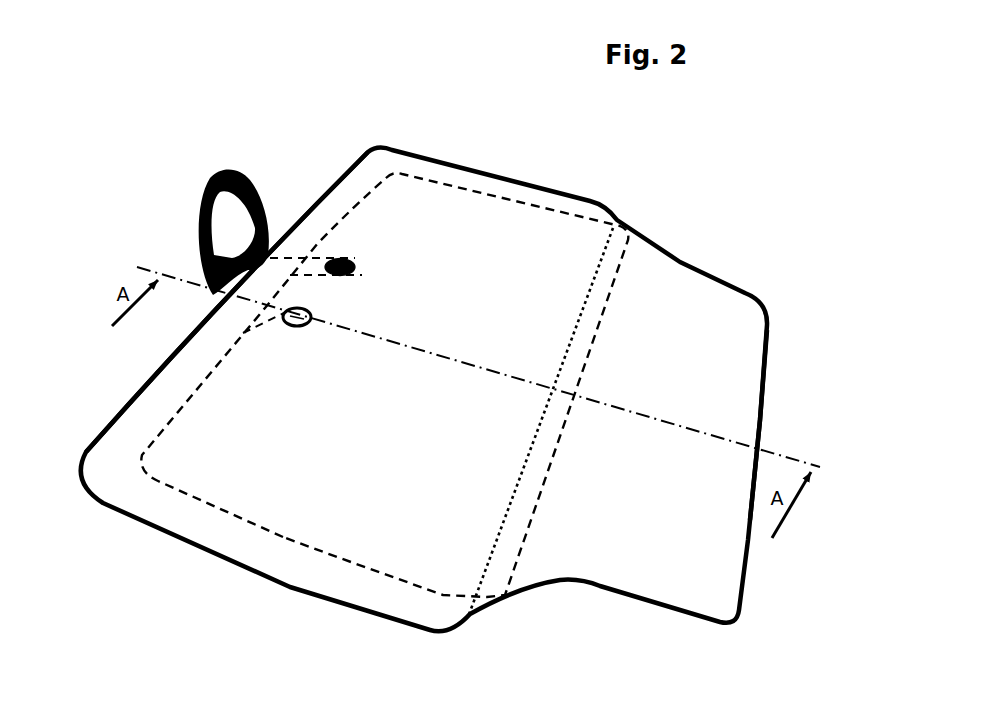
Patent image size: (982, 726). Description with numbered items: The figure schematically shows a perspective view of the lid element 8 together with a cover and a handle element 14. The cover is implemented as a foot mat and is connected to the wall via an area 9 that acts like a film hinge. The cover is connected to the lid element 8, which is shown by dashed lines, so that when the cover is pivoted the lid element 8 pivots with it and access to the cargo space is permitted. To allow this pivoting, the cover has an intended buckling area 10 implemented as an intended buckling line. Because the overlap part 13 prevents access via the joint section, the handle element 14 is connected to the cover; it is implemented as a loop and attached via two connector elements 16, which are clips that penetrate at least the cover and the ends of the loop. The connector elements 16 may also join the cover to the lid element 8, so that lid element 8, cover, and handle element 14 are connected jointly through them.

The lid element 8 is at (272, 536).
The area 9 is at (724, 254).
The intended buckling area 10 is at (489, 552).
The overlap part 13 is at (112, 446).
The handle element 14 is at (201, 164).
The connector elements 16 is at (298, 305).